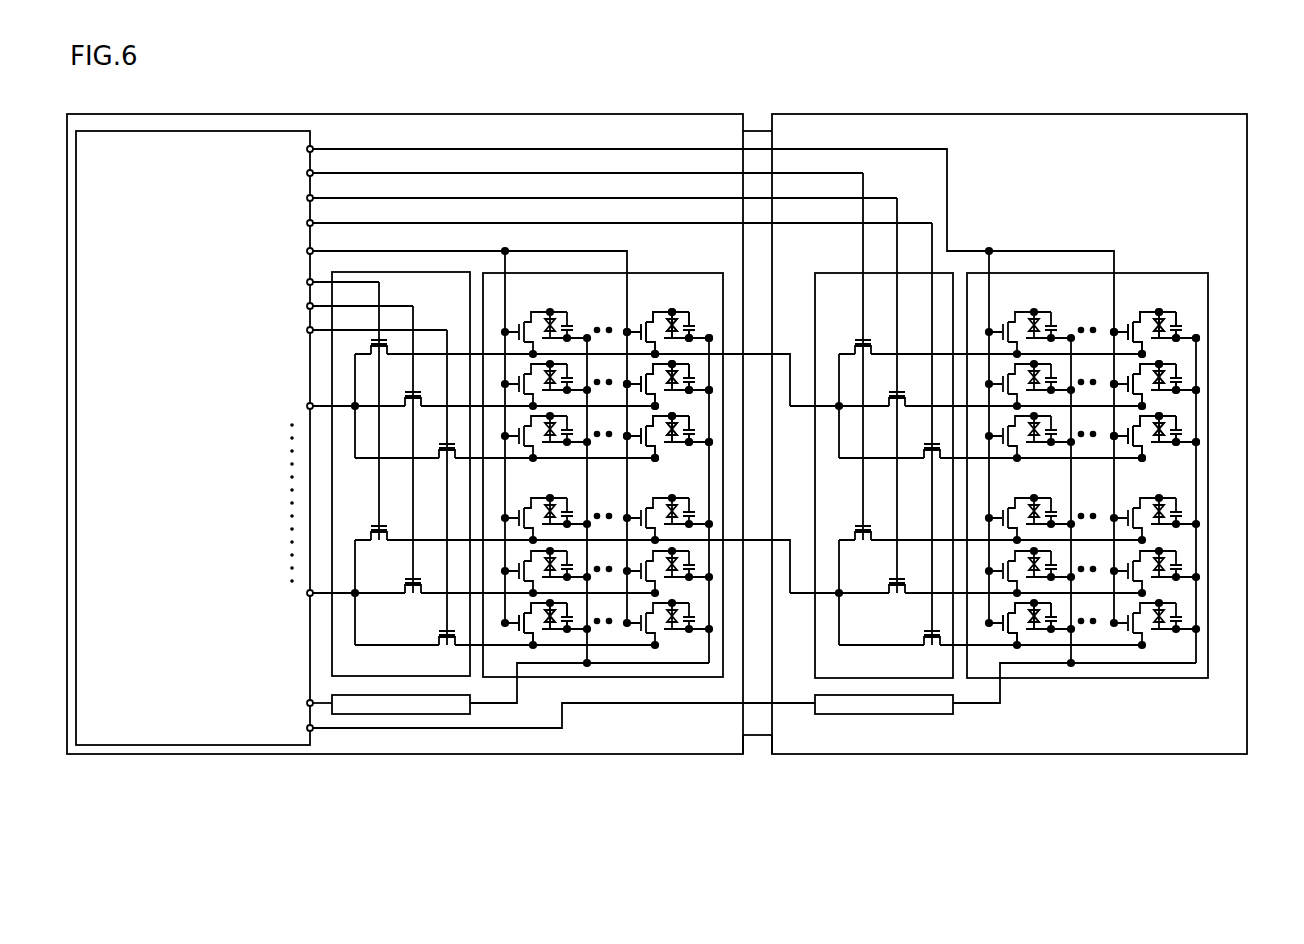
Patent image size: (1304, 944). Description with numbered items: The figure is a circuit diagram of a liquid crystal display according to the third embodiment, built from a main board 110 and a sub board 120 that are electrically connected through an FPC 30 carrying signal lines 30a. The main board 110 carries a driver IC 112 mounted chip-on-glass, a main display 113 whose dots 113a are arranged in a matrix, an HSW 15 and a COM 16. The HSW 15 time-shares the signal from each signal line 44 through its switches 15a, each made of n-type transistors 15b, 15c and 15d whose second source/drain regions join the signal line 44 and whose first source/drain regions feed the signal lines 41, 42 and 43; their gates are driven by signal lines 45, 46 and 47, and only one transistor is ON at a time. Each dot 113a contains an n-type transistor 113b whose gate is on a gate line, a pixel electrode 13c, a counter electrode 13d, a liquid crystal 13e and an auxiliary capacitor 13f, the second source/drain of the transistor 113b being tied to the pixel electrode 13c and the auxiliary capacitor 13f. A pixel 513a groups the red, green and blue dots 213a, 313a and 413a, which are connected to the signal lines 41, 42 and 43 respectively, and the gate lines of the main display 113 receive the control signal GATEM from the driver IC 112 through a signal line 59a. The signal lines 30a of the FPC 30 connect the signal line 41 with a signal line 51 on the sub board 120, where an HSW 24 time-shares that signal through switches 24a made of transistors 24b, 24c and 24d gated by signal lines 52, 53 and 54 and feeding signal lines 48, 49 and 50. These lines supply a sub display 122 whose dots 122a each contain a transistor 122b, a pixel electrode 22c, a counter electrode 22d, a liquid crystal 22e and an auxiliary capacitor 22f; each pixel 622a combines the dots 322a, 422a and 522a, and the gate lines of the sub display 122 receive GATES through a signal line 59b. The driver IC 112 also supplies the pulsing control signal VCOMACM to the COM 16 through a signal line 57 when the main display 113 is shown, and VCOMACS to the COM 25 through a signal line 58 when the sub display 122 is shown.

The main board 110 is at (200, 114).
The driver IC 112 is at (257, 131).
The sub board 120 is at (1245, 114).
The FPC 30 is at (753, 131).
The signal lines 30a is at (765, 737).
The signal line 58 is at (744, 755).
The signal line 51 is at (775, 755).
The HSW 15 is at (357, 272).
The switch 15a is at (483, 790).
The n-type transistor 15b is at (379, 548).
The n-type transistor 15c is at (413, 601).
The n-type transistor 15d is at (447, 653).
The COM 16 is at (338, 717).
The signal line 44 is at (310, 745).
The signal line 57 is at (322, 707).
The signal line 59a is at (340, 251).
The signal line 45 is at (375, 278).
The signal line 46 is at (398, 278).
The signal line 47 is at (427, 278).
The signal line 43 is at (447, 278).
The signal line 42 is at (458, 278).
The signal line 41 is at (488, 462).
The main display 113 is at (725, 680).
The dot 113a is at (707, 790).
The pixel 513a is at (680, 52).
The dot 413a is at (648, 422).
The dot 313a is at (652, 376).
The dot 213a is at (660, 303).
The n-type transistor 113b is at (522, 632).
The pixel electrode 13c is at (548, 628).
The counter electrode 13d is at (567, 624).
The auxiliary capacitor 13f is at (540, 608).
The liquid crystal 13e is at (587, 664).
The HSW 24 is at (812, 305).
The switch 24a is at (967, 790).
The n-type transistor 24b is at (863, 548).
The n-type transistor 24c is at (897, 601).
The n-type transistor 24d is at (932, 653).
The COM 25 is at (820, 715).
The signal line 59b is at (829, 149).
The signal line 52 is at (856, 173).
The signal line 53 is at (880, 198).
The signal line 54 is at (903, 223).
The signal line 50 is at (930, 245).
The signal line 49 is at (945, 180).
The signal line 48 is at (985, 462).
The sub display 122 is at (1208, 680).
The dot 122a is at (1190, 790).
The pixel 622a is at (1167, 52).
The dot 522a is at (1130, 420).
The dot 422a is at (1137, 376).
The dot 322a is at (1148, 303).
The n-type transistor 122b is at (1006, 632).
The pixel electrode 22c is at (1032, 628).
The counter electrode 22d is at (1051, 624).
The auxiliary capacitor 22f is at (1020, 612).
The liquid crystal 22e is at (1148, 630).